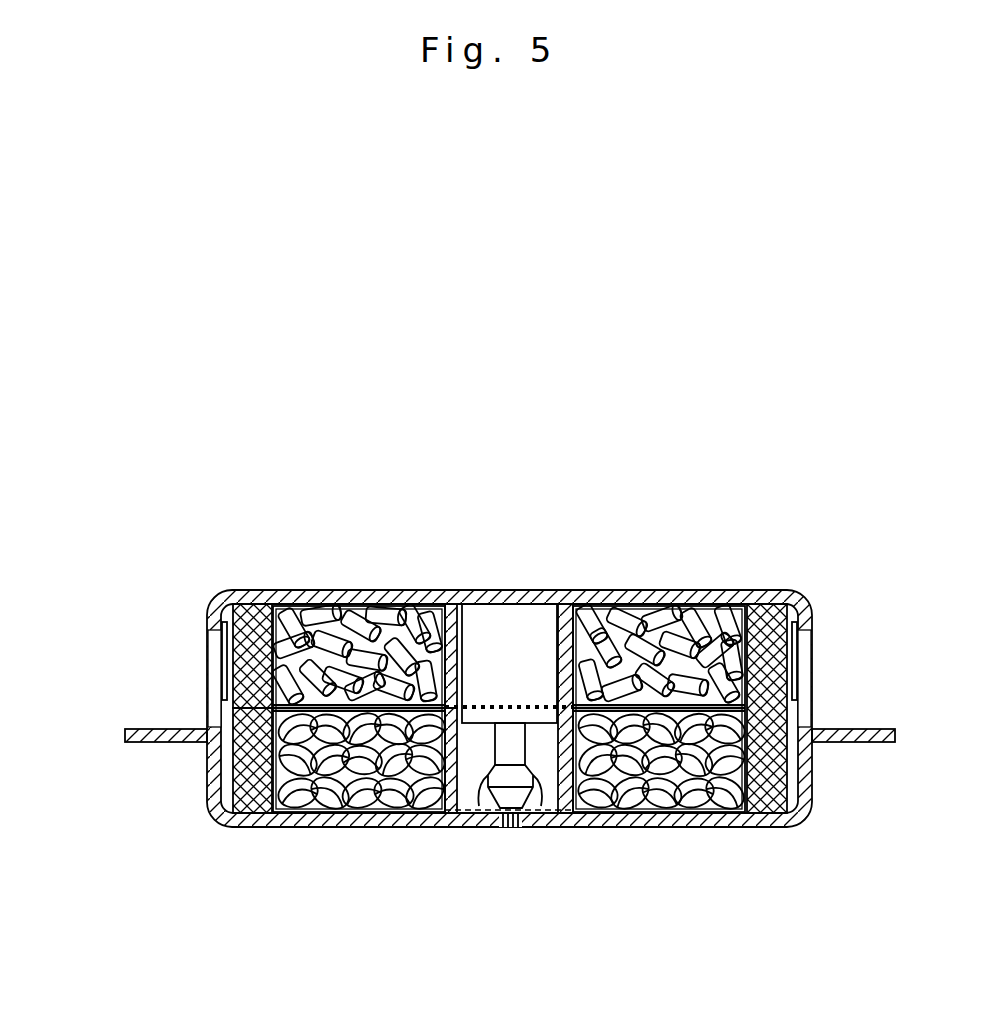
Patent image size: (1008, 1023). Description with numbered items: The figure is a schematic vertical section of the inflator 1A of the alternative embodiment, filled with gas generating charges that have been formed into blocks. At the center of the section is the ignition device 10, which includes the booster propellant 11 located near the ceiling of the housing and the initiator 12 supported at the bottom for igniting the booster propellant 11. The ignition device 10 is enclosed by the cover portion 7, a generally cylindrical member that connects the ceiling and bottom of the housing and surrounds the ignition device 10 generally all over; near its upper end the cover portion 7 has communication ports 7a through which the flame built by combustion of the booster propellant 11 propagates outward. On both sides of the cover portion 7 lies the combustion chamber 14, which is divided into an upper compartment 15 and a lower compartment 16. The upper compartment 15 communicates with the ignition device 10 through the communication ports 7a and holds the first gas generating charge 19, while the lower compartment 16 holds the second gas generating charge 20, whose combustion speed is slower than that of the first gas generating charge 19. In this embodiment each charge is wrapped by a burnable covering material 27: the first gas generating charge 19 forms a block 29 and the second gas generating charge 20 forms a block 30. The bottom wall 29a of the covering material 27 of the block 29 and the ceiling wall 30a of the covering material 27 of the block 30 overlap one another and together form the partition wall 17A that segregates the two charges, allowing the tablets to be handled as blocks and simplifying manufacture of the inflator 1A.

The inflator 1A is at (270, 388).
The cover portion 7 is at (497, 709).
The communication ports 7a is at (448, 657).
The ignition device 10 is at (529, 799).
The booster propellant 11 is at (548, 715).
The initiator 12 is at (509, 792).
The combustion chamber 14 is at (684, 557).
The upper compartment 15 is at (703, 615).
The lower compartment 16 is at (723, 710).
The partition wall 17A is at (402, 708).
The first gas generating charge 19 is at (317, 604).
The second gas generating charge 20 is at (335, 812).
The covering material 27 is at (285, 604).
The block 29 is at (643, 604).
The bottom wall 29a is at (273, 692).
The block 30 is at (638, 812).
The ceiling wall 30a is at (273, 742).